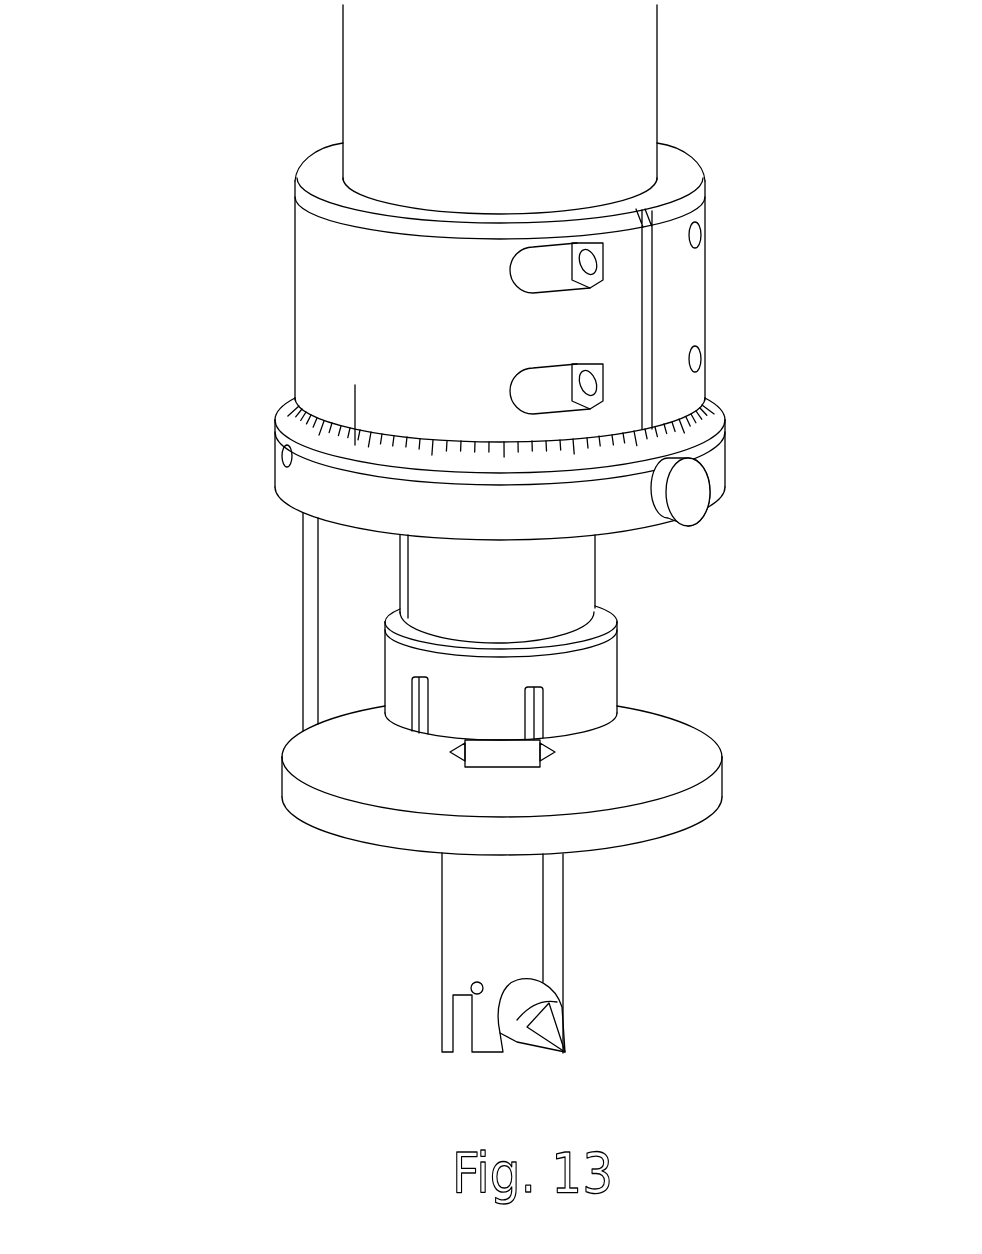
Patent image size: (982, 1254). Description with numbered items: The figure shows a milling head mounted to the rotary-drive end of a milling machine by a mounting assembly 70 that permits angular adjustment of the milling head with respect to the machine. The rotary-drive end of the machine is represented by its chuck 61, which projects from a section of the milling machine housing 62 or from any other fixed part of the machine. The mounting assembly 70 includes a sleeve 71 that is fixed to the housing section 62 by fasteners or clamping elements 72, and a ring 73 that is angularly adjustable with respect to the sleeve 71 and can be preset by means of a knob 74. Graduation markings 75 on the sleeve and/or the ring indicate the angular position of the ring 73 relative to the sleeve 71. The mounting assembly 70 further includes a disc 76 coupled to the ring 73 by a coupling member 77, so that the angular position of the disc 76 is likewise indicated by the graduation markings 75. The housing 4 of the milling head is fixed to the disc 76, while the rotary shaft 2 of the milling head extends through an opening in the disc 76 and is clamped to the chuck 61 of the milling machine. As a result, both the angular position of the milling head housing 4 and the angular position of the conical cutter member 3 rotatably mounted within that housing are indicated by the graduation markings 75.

The mounting assembly 70 is at (208, 440).
The milling machine housing section 62 is at (367, 130).
The sleeve 71 is at (687, 297).
The clamping elements 72 is at (577, 248).
The graduation markings 75 is at (410, 432).
The ring 73 is at (306, 483).
The knob 74 is at (692, 503).
The coupling member 77 is at (337, 636).
The chuck 61 is at (587, 675).
The disc 76 is at (697, 760).
The rotary shaft 2 is at (498, 760).
The housing 4 is at (456, 941).
The conical cutter member 3 is at (562, 1023).